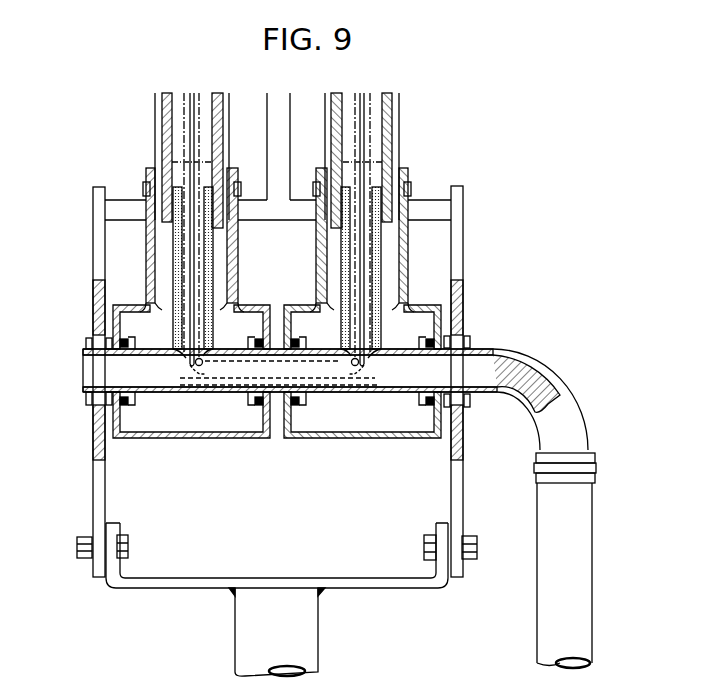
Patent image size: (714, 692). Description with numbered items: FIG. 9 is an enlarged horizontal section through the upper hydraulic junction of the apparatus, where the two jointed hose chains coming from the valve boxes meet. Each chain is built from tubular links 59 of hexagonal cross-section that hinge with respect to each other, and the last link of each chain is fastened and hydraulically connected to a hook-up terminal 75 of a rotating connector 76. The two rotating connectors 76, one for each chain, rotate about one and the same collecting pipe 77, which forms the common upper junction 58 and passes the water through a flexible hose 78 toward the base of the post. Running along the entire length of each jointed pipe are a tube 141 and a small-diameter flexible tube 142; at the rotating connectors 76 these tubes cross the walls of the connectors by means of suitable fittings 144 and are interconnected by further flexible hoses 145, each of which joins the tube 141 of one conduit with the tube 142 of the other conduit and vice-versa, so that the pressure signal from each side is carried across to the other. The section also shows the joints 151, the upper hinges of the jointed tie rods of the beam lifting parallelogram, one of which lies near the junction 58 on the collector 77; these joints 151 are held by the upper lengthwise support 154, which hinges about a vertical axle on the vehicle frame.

The common upper junction 58 is at (88, 492).
The tubular links 59 is at (158, 131).
The hook-up terminal 75 is at (152, 248).
The rotating connector 76 is at (178, 439).
The collecting pipe 77 is at (500, 352).
The flexible hose 78 is at (574, 586).
The tube 141 is at (363, 272).
The flexible tube 142 is at (355, 243).
The fittings 144 is at (201, 367).
The flexible hoses 145 is at (241, 372).
The upper joints 151 is at (423, 549).
The upper lengthwise support 154 is at (258, 639).